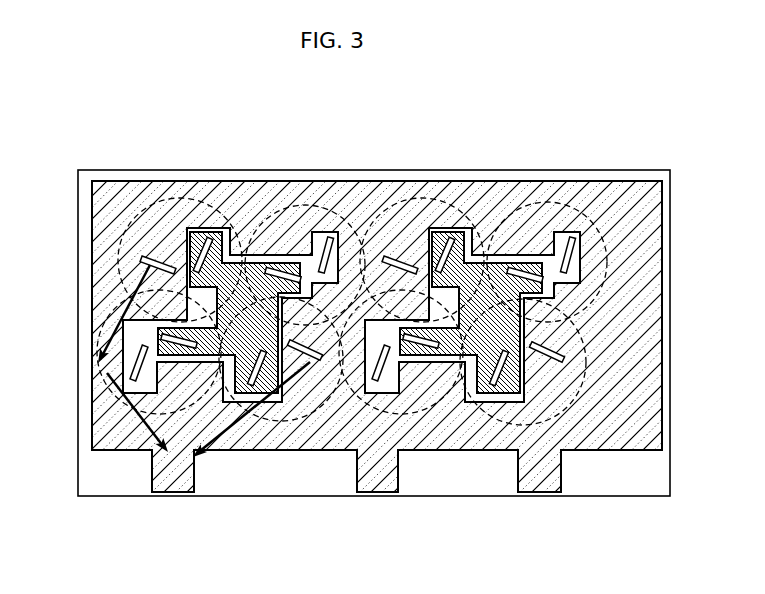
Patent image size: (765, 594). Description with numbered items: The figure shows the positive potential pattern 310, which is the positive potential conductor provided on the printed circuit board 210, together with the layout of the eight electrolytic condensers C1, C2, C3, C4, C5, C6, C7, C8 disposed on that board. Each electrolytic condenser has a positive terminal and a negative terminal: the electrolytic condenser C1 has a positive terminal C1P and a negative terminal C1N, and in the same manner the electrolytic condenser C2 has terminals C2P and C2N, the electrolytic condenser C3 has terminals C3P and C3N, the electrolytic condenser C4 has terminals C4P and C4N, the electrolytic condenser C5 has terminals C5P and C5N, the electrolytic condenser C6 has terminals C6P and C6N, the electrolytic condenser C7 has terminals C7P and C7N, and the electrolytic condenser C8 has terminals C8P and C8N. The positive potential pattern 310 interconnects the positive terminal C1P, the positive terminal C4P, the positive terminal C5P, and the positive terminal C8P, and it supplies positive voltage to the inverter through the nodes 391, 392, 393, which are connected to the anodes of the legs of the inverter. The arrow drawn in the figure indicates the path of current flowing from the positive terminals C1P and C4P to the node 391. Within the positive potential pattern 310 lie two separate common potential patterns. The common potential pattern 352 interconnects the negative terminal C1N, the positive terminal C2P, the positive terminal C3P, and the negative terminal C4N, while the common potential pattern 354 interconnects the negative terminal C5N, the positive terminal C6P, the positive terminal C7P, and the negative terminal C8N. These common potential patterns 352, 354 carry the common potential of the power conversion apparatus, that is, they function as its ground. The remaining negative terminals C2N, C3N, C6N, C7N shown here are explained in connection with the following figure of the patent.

The printed circuit board 210 is at (627, 170).
The positive potential pattern 310 is at (648, 226).
The common potential pattern 352 is at (264, 312).
The common potential pattern 354 is at (522, 300).
The node 391 is at (158, 473).
The node 392 is at (375, 485).
The node 393 is at (562, 473).
The electrolytic condenser C1 is at (178, 198).
The electrolytic condenser C2 is at (268, 215).
The electrolytic condenser C3 is at (118, 408).
The electrolytic condenser C4 is at (278, 421).
The electrolytic condenser C5 is at (426, 198).
The electrolytic condenser C6 is at (547, 202).
The electrolytic condenser C7 is at (422, 410).
The electrolytic condenser C8 is at (588, 388).
The positive terminal C1P is at (148, 257).
The negative terminal C1N is at (208, 240).
The positive terminal C2P is at (285, 270).
The negative terminal C2N is at (328, 242).
The positive terminal C3P is at (180, 346).
The negative terminal C3N is at (133, 350).
The positive terminal C4P is at (306, 360).
The negative terminal C4N is at (256, 388).
The positive terminal C5P is at (400, 258).
The negative terminal C5N is at (450, 240).
The positive terminal C6P is at (525, 268).
The negative terminal C6N is at (571, 242).
The positive terminal C7P is at (424, 357).
The negative terminal C7N is at (431, 380).
The positive terminal C8P is at (562, 352).
The negative terminal C8N is at (503, 388).